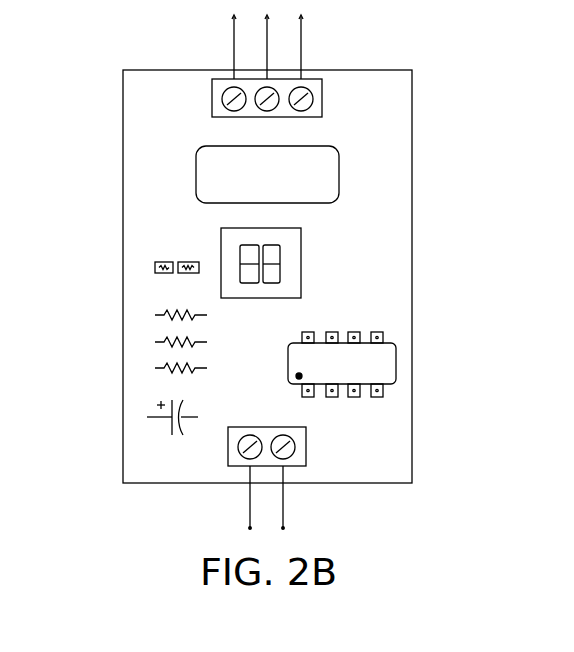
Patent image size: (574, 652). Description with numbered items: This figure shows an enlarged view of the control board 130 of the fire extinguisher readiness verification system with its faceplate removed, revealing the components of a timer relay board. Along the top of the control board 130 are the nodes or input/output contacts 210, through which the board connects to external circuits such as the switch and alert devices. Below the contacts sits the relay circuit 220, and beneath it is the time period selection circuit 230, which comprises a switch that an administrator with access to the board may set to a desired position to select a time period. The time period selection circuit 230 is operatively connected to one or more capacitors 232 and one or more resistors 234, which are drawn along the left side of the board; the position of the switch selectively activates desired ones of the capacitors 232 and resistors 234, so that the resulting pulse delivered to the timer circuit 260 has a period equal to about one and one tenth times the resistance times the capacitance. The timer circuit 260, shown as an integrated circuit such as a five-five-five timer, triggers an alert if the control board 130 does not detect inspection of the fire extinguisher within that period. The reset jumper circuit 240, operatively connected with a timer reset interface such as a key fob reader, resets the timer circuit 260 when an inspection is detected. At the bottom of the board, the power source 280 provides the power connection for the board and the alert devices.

The control board 130 is at (123, 187).
The input/output contacts 210 is at (302, 52).
The relay circuit 220 is at (210, 172).
The time period selection circuit 230 is at (301, 258).
The capacitors 232 is at (163, 342).
The resistors 234 is at (166, 427).
The reset jumper circuit 240 is at (161, 259).
The timer circuit 260 is at (396, 364).
The power source 280 is at (306, 450).